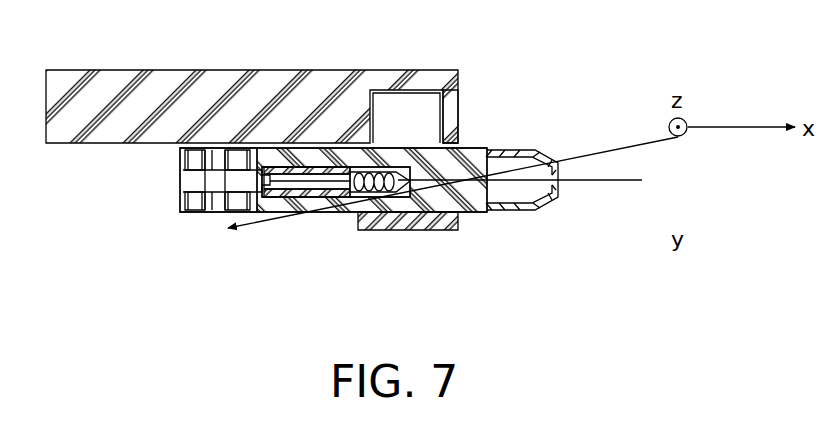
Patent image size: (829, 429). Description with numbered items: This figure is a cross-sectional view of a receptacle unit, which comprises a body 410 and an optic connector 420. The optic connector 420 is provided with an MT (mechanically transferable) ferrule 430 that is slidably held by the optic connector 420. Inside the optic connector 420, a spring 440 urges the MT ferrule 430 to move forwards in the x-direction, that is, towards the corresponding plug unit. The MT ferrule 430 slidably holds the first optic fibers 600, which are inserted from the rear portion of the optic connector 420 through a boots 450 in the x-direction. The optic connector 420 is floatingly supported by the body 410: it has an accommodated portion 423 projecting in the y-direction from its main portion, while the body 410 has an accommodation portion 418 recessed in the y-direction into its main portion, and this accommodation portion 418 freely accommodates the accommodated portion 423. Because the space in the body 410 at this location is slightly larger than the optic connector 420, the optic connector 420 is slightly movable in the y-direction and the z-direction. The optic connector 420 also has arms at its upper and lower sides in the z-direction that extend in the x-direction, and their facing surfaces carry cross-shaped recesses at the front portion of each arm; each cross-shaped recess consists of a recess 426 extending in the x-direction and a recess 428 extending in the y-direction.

The body 410 is at (271, 82).
The accommodation portion 418 is at (384, 92).
The accommodated portion 423 is at (445, 103).
The optic connector 420 is at (167, 213).
The recess 426 is at (193, 183).
The recess 428 is at (218, 200).
The MT ferrule 430 is at (317, 190).
The spring 440 is at (378, 192).
The boots 450 is at (522, 211).
The first optic fibers 600 is at (580, 178).